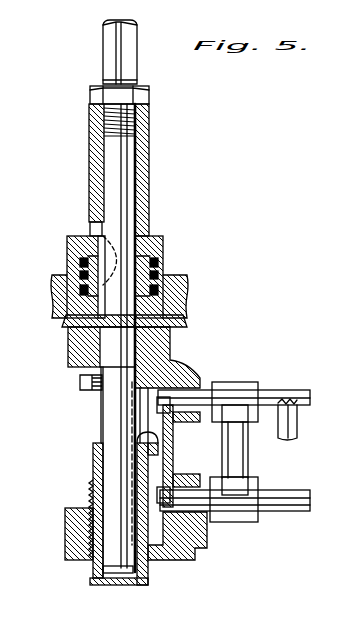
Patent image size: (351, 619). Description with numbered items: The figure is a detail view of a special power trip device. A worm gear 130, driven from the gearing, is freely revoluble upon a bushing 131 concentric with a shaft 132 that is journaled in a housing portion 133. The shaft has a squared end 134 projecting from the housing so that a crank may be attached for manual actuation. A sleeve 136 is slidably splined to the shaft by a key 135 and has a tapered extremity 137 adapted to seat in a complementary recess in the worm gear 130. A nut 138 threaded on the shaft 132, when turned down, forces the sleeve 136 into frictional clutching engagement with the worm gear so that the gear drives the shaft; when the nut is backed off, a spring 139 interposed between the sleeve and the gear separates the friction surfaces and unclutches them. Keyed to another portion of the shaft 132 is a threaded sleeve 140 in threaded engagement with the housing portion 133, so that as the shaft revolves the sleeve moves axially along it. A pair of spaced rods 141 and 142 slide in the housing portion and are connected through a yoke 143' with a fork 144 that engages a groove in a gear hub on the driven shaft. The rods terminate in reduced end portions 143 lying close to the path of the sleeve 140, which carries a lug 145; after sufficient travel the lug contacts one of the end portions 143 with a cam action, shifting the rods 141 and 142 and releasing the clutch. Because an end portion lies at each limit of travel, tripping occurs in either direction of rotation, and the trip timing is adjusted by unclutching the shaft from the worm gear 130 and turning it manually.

The worm gear 130 is at (178, 282).
The bushing 131 is at (68, 327).
The shaft 132 is at (127, 213).
The housing portion 133 is at (168, 352).
The squared end 134 is at (133, 46).
The key 135 is at (87, 231).
The sleeve 136 is at (90, 141).
The tapered extremity 137 is at (58, 286).
The nut 138 is at (141, 97).
The spring 139 is at (160, 262).
The threaded sleeve 140 is at (93, 454).
The rod 141 is at (275, 394).
The rod 142 is at (289, 507).
The reduced end portion 143 is at (173, 450).
The yoke 143' is at (241, 392).
The fork 144 is at (238, 445).
The lug 145 is at (134, 427).